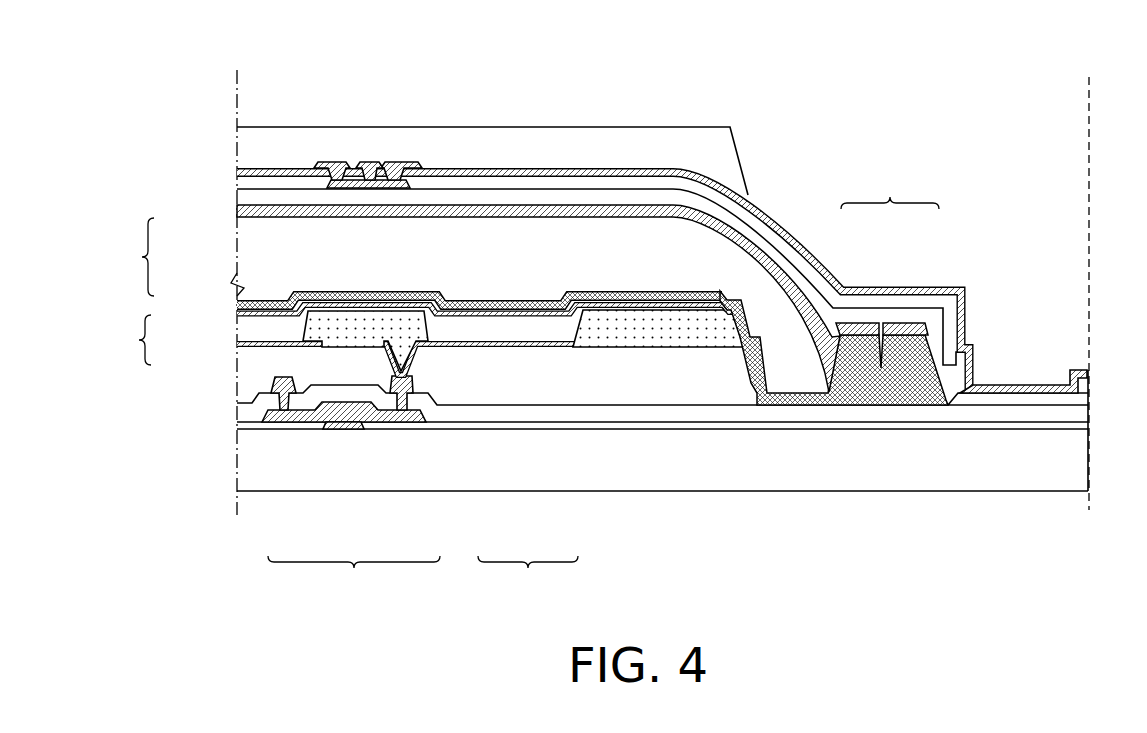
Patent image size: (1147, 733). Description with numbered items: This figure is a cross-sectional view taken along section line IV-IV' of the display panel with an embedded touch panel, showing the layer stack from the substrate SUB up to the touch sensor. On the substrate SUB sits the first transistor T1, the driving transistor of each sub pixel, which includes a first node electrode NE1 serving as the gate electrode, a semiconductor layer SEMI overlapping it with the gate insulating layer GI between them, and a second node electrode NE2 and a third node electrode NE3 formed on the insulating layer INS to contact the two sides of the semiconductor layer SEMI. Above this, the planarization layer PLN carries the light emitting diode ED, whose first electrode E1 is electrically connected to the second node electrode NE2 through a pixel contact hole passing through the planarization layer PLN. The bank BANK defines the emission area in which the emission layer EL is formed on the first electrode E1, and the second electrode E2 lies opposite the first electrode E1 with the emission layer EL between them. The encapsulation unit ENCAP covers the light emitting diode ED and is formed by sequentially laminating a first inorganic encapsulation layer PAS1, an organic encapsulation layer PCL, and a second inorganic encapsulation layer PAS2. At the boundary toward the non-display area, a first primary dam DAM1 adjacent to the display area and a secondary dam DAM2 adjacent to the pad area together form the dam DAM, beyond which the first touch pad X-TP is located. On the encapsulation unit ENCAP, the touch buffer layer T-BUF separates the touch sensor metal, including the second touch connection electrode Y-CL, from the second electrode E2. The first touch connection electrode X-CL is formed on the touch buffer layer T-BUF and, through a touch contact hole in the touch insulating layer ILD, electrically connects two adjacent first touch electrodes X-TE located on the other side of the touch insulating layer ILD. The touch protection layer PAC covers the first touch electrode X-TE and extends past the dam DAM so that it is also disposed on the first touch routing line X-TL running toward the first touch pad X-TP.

The section line IV-IV' IV is at (666, 280).
The substrate SUB is at (250, 471).
The gate insulating layer GI is at (241, 428).
The insulating layer INS is at (243, 409).
The semiconductor layer SEMI is at (306, 423).
The first node electrode NE1 is at (345, 429).
The second node electrode NE2 is at (388, 411).
The third node electrode NE3 is at (276, 413).
The first transistor T1 is at (354, 579).
The planarization layer PLN is at (250, 383).
The first electrode E1 is at (237, 345).
The emission layer EL is at (237, 328).
The second electrode E2 is at (237, 313).
The light emitting diode ED is at (343, 458).
The bank BANK is at (404, 327).
The first inorganic encapsulation layer PAS1 is at (237, 301).
The organic encapsulation layer PCL is at (250, 253).
The second inorganic encapsulation layer PAS2 is at (237, 212).
The encapsulation unit ENCAP is at (111, 257).
The touch buffer layer T-BUF is at (237, 193).
The touch insulating layer ILD is at (237, 176).
The first touch routing line X-TL is at (772, 208).
The first touch pad X-TP is at (1012, 397).
The second touch connection electrode Y-CL is at (359, 186).
The first touch electrode X-TE is at (327, 163).
The first touch connection electrode X-CL is at (381, 186).
The touch protection layer PAC is at (678, 137).
The dam DAM is at (890, 190).
The first primary dam DAM1 is at (857, 303).
The secondary dam DAM2 is at (899, 302).